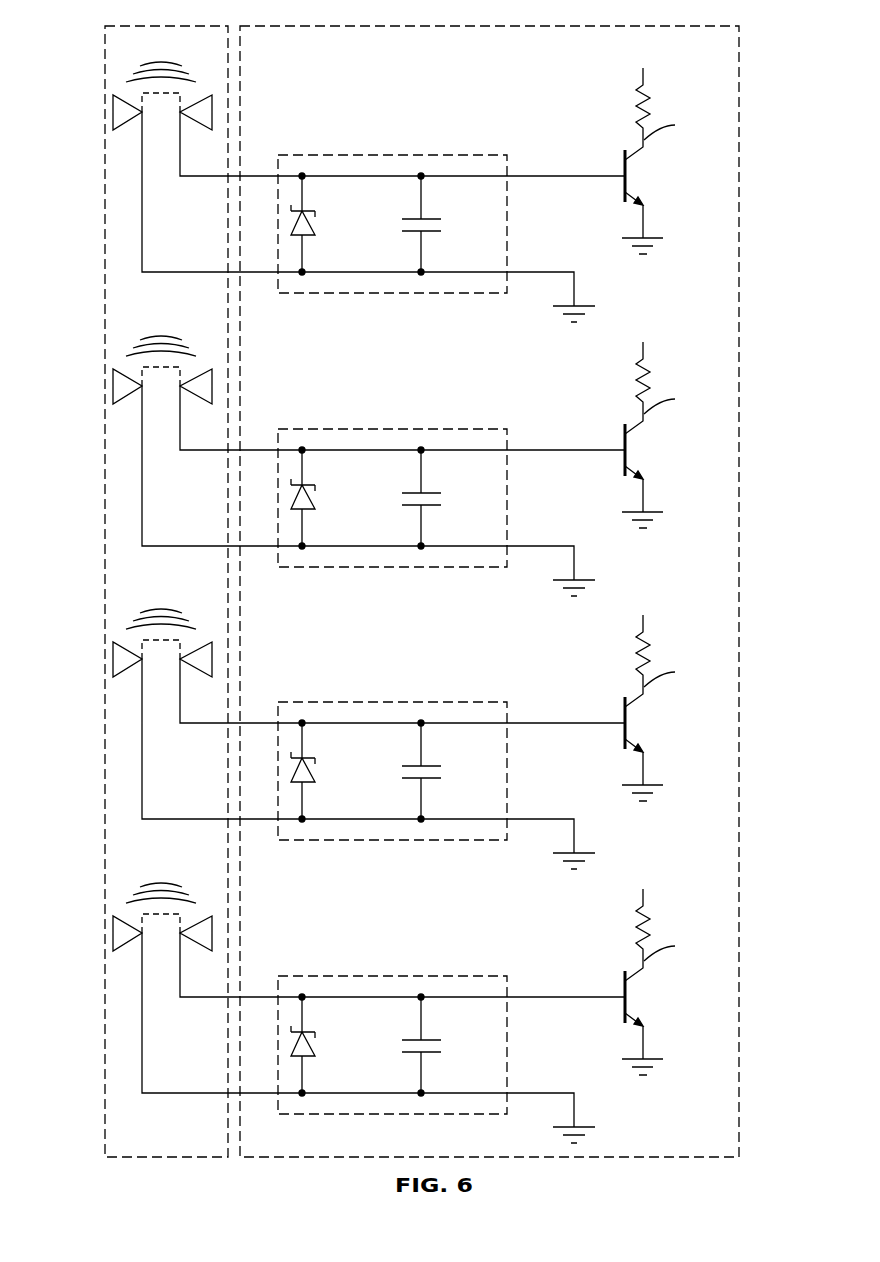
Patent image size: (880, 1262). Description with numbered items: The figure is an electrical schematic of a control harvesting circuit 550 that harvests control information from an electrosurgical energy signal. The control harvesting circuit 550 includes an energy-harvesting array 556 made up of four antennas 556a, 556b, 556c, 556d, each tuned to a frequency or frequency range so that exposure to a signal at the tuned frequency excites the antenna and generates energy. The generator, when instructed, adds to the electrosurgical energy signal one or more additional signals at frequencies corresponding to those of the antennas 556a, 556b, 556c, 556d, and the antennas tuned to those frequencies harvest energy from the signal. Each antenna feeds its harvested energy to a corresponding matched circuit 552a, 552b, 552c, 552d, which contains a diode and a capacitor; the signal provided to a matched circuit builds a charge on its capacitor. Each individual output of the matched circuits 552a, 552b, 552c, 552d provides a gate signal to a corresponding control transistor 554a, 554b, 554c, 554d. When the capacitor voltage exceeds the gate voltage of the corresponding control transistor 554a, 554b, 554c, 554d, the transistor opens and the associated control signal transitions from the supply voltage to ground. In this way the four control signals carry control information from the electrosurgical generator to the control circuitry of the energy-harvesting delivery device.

The control harvesting circuit 550 is at (713, 63).
The matched circuit 552a is at (393, 155).
The matched circuit 552b is at (393, 429).
The matched circuit 552c is at (393, 702).
The matched circuit 552d is at (393, 976).
The control transistor 554a is at (623, 165).
The control transistor 554b is at (623, 439).
The control transistor 554c is at (623, 712).
The control transistor 554d is at (623, 986).
The energy-harvesting array 556 is at (103, 558).
The antenna 556a is at (163, 137).
The antenna 556b is at (163, 411).
The antenna 556c is at (163, 684).
The antenna 556d is at (163, 958).